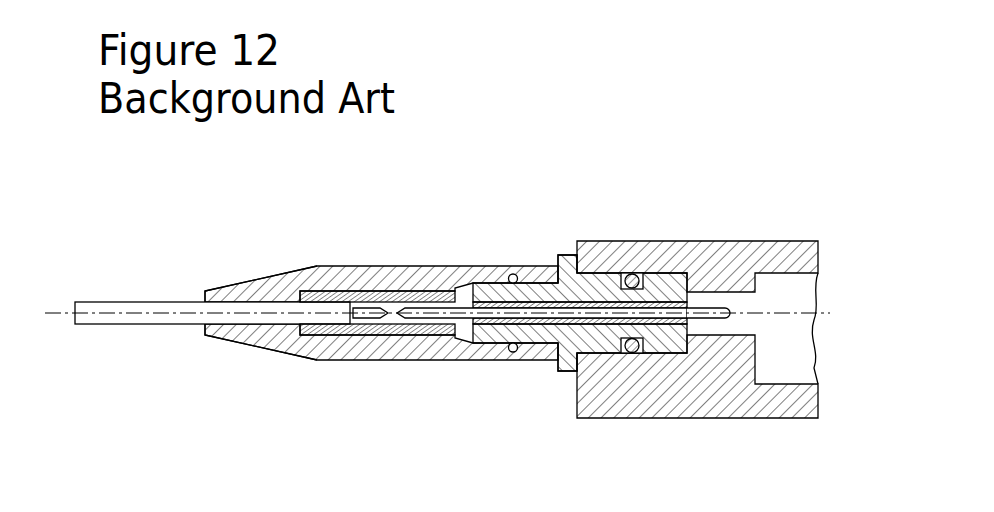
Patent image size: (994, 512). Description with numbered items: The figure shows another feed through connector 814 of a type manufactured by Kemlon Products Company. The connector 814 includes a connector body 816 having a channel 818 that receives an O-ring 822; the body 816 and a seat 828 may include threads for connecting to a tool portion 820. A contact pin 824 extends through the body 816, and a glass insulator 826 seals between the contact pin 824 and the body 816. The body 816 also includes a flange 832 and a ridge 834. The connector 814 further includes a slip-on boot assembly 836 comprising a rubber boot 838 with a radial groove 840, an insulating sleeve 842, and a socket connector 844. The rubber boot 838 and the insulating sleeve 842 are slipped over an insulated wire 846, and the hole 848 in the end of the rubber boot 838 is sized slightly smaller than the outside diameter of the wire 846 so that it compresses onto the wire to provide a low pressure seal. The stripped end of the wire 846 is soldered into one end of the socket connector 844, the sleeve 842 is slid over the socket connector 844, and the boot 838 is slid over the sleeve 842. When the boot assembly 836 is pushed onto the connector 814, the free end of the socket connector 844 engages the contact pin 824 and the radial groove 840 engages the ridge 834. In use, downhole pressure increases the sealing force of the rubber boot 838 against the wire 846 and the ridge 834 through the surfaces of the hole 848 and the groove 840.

The feed through connector 814 is at (440, 306).
The connector body 816 is at (608, 273).
The channel 818 is at (638, 352).
The tool portion 820 is at (731, 396).
The O-ring 822 is at (628, 354).
The contact pin 824 is at (712, 306).
The glass insulator 826 is at (661, 322).
The seat 828 is at (673, 272).
The flange 832 is at (563, 255).
The ridge 834 is at (509, 270).
The slip-on boot assembly 836 is at (266, 274).
The rubber boot 838 is at (420, 341).
The radial groove 840 is at (510, 352).
The insulating sleeve 842 is at (316, 347).
The socket connector 844 is at (387, 324).
The insulated wire 846 is at (105, 301).
The hole 848 is at (203, 296).